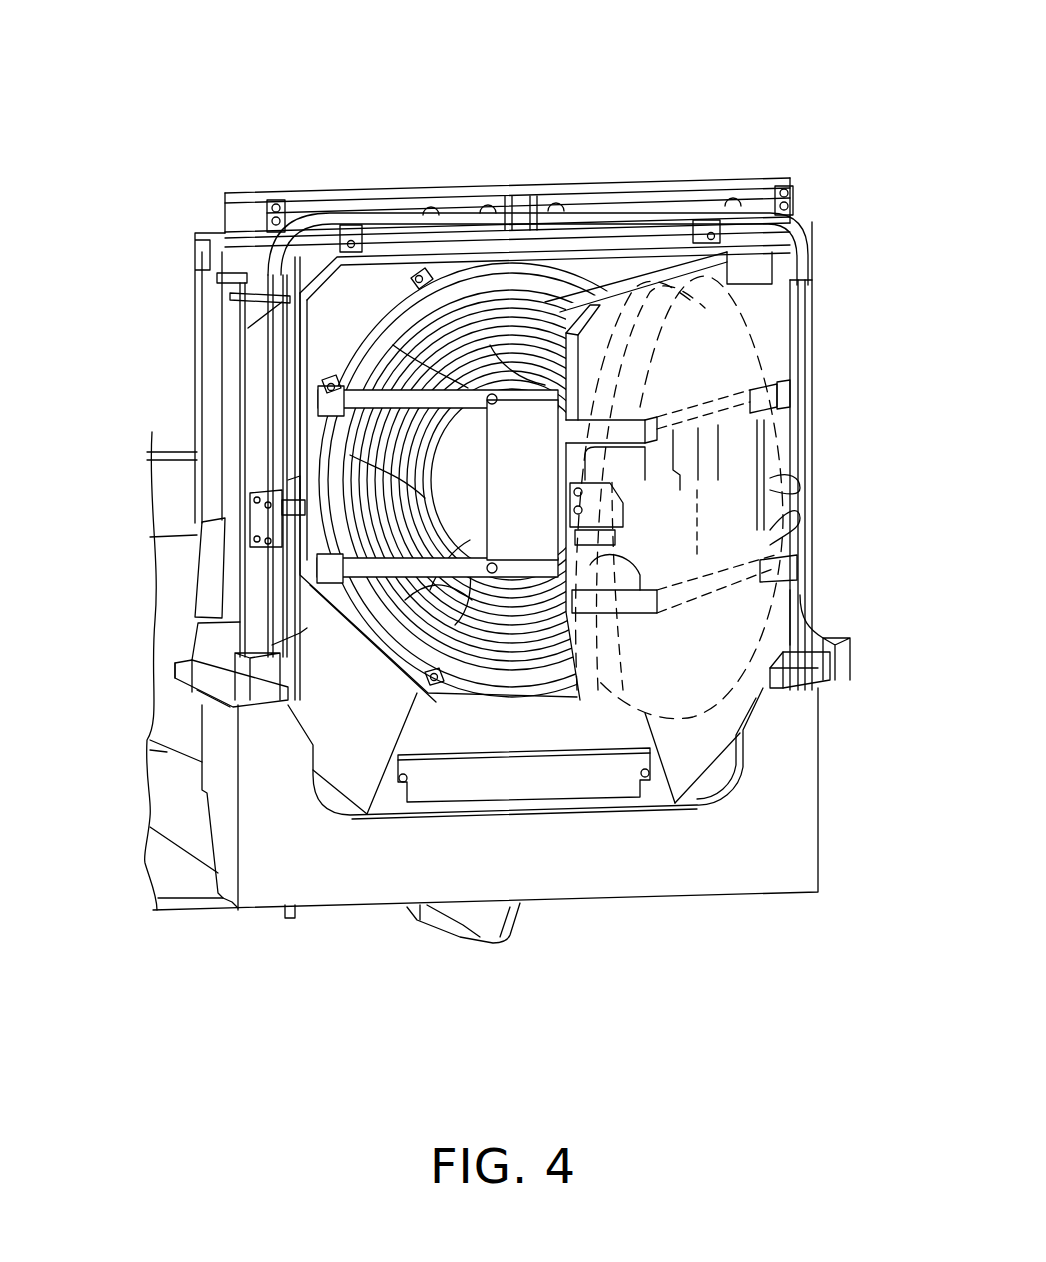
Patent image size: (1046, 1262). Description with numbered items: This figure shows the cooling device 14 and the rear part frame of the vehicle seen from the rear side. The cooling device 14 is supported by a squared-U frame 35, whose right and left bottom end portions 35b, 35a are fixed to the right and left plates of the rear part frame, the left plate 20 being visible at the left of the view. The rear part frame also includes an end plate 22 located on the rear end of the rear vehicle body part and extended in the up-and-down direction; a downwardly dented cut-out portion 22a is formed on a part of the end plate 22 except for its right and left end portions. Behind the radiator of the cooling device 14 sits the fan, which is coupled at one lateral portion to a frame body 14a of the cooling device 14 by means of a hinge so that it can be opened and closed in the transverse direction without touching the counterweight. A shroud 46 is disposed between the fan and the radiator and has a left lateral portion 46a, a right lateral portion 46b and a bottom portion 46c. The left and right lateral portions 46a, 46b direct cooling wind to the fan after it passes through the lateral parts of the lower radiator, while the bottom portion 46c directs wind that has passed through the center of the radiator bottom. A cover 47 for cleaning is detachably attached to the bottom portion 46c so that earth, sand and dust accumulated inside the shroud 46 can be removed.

The cooling device 14 is at (494, 158).
The frame body 14a is at (798, 383).
The left plate 20 is at (223, 773).
The end plate 22 is at (628, 883).
The cut-out portion 22a is at (568, 800).
The squared-U frame 35 is at (635, 213).
The left bottom end portion 35a is at (215, 660).
The right bottom end portion 35b is at (842, 673).
The shroud 46 is at (392, 808).
The left lateral portion 46a is at (352, 730).
The right lateral portion 46b is at (693, 757).
The bottom portion 46c is at (657, 793).
The cover for cleaning 47 is at (483, 780).